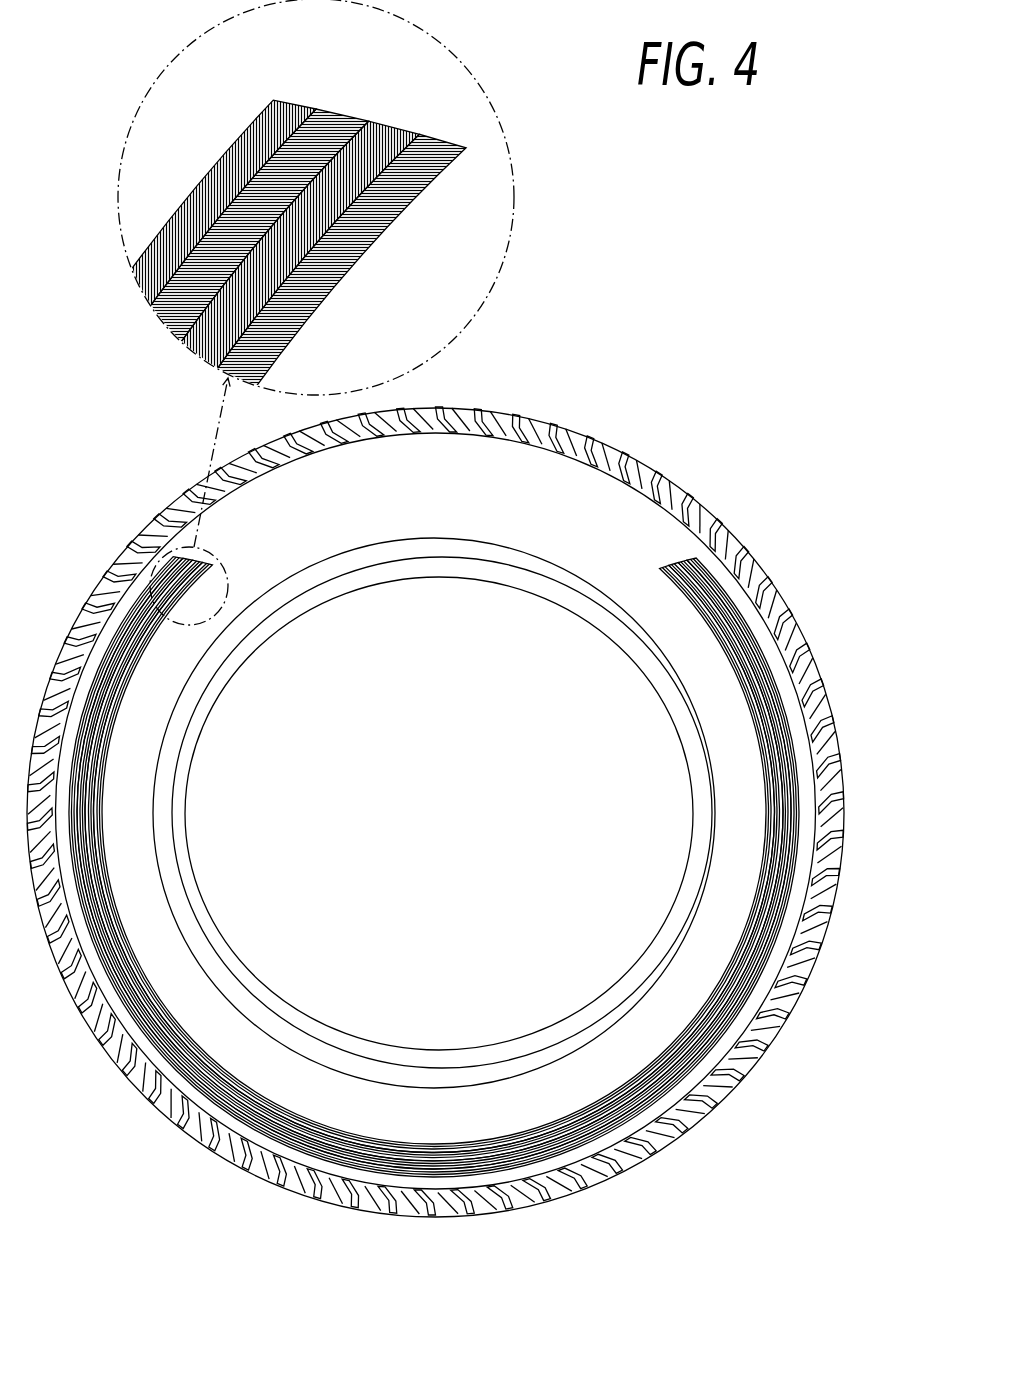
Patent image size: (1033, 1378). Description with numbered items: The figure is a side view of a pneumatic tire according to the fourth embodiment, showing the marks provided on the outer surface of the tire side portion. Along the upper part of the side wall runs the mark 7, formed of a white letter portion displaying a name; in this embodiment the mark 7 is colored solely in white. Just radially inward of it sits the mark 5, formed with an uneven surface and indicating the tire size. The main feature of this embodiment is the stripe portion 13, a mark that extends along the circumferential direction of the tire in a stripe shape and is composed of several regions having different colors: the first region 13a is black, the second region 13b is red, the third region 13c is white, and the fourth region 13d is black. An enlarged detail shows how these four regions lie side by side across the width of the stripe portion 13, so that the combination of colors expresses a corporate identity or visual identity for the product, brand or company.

The mark 5 is at (430, 535).
The mark 7 is at (528, 462).
The stripe portion 13 is at (717, 575).
The first region 13a is at (747, 637).
The second region 13b is at (743, 643).
The third region 13c is at (712, 616).
The fourth region 13d is at (722, 645).